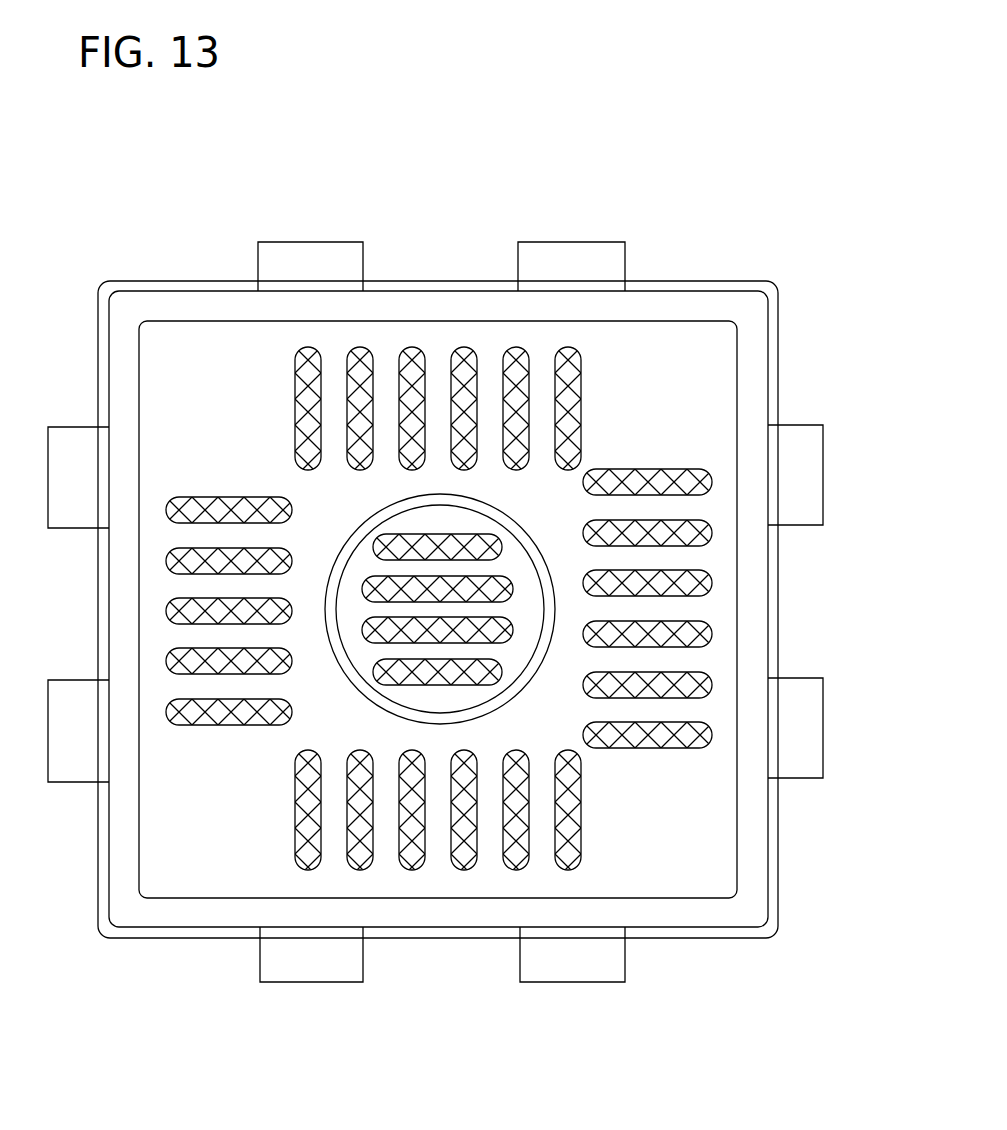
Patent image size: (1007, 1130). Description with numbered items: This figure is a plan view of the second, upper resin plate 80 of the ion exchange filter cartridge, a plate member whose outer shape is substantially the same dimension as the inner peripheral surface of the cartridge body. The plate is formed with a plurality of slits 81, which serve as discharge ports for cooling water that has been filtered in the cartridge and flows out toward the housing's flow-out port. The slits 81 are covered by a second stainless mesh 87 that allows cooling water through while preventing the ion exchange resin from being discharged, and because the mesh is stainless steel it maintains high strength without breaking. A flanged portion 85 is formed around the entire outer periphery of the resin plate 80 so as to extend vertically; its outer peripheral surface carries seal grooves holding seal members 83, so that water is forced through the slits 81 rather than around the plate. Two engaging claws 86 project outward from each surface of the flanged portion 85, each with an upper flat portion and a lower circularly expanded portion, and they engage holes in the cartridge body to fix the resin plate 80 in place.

The resin plate 80 is at (730, 215).
The slits 81 is at (463, 352).
The seal members 83 is at (178, 288).
The flanged portion 85 is at (660, 298).
The engaging claws 86 is at (318, 245).
The second stainless mesh 87 is at (478, 357).